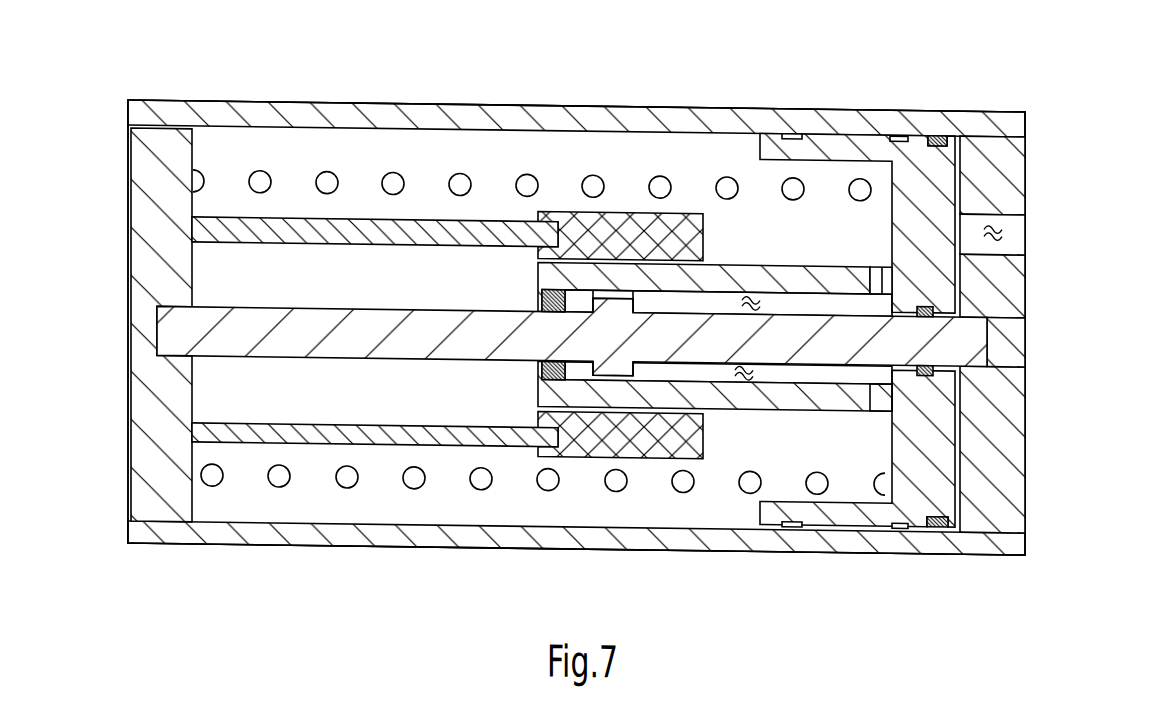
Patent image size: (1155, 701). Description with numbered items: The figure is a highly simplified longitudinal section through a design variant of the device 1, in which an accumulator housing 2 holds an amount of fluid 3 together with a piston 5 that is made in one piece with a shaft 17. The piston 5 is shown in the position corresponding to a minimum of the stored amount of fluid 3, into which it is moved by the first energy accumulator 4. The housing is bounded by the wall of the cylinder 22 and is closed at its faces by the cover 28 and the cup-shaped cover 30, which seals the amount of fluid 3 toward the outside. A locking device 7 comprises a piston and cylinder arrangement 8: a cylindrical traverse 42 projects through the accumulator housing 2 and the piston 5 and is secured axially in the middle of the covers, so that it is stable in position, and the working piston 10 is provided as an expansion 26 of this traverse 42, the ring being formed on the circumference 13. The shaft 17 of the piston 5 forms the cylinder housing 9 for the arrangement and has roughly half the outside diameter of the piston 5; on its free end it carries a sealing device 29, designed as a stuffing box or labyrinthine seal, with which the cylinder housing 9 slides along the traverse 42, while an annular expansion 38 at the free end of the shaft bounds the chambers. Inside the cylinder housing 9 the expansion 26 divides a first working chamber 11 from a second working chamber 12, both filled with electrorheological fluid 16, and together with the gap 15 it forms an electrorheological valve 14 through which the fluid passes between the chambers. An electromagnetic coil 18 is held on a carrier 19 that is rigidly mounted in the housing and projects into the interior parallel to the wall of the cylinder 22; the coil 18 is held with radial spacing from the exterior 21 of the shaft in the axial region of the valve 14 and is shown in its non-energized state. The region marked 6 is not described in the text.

The device 1 is at (557, 69).
The accumulator housing 2 is at (427, 93).
The amount of fluid 3 is at (998, 216).
The first energy accumulator 4 is at (323, 160).
The piston 5 is at (927, 174).
The chamber 6 is at (595, 461).
The locking device 7 is at (648, 466).
The piston and cylinder arrangement 8 is at (522, 368).
The cylinder housing 9 is at (770, 271).
The working piston 10 is at (707, 245).
The first working chamber 11 is at (578, 296).
The second working chamber 12 is at (813, 293).
The circumference 13 is at (613, 363).
The valve 14 is at (583, 384).
The gap 15 is at (652, 293).
The electrorheological fluid 16 is at (771, 294).
The shaft 17 is at (838, 386).
The electromagnetic coil 18 is at (690, 427).
The carrier 19 is at (325, 230).
The exterior 21 is at (792, 401).
The cylinder 22 is at (722, 114).
The expansion 26 is at (606, 301).
The cover 28 is at (150, 223).
The sealing device 29 is at (535, 294).
The cover 30 is at (995, 391).
The annular expansion 38 is at (885, 376).
The cylindrical traverse 42 is at (352, 330).